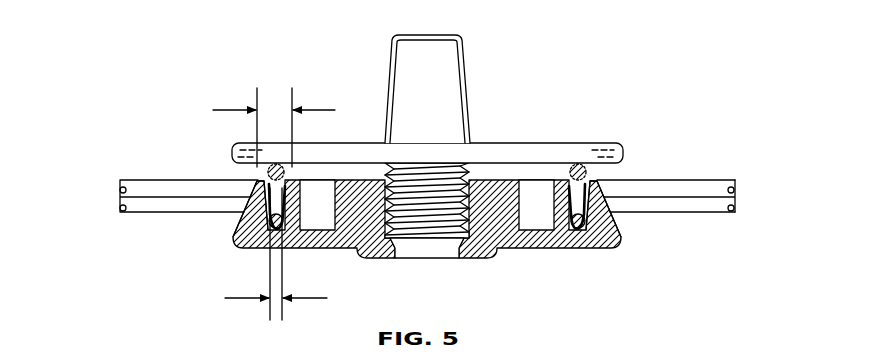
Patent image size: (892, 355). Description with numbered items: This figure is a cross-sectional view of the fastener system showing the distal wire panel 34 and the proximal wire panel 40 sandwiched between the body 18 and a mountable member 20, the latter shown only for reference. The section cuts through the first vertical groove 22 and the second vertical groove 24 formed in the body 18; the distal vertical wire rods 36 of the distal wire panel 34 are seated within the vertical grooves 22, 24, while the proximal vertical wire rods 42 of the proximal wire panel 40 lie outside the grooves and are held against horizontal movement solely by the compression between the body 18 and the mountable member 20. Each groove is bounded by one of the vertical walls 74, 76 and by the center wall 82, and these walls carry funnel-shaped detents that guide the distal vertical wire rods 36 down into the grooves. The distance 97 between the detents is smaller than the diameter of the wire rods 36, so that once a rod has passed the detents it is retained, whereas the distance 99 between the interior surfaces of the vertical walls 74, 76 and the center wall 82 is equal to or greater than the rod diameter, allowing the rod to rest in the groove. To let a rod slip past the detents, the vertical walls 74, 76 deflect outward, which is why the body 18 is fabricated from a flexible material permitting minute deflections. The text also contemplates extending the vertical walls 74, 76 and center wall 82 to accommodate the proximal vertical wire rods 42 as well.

The body 18 is at (490, 262).
The mountable member 20 is at (495, 141).
The first vertical groove 22 is at (243, 205).
The second vertical groove 24 is at (598, 181).
The distal wire panel 34 is at (713, 213).
The distal vertical wire rods 36 is at (264, 231).
The proximal wire panel 40 is at (707, 183).
The proximal vertical wire rods 42 is at (268, 175).
The vertical wall 74 is at (262, 206).
The vertical wall 76 is at (598, 222).
The center wall 82 is at (552, 186).
The distance 97 is at (238, 300).
The distance 99 is at (230, 110).